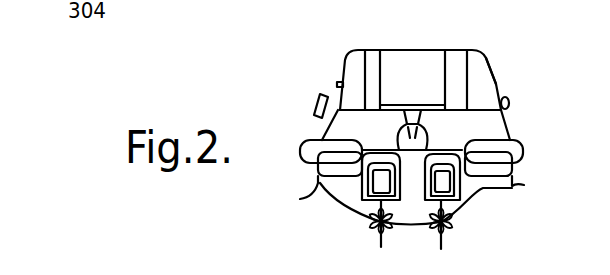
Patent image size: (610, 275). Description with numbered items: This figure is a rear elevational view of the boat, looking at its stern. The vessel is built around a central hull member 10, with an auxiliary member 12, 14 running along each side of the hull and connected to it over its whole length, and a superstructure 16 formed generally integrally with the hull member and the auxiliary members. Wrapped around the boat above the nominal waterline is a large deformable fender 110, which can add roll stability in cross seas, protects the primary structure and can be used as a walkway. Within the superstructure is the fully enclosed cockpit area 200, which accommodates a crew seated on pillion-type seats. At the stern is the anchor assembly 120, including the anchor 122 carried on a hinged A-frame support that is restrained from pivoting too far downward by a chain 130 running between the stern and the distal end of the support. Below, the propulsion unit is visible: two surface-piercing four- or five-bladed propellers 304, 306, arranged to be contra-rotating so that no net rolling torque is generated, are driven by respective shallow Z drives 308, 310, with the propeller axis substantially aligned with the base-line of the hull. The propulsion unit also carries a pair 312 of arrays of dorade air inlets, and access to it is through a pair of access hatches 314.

The central hull member 10 is at (483, 189).
The auxiliary member 12 is at (524, 185).
The auxiliary member 14 is at (300, 199).
The superstructure 16 is at (491, 65).
The deformable fender 110 is at (306, 138).
The anchor assembly 120 is at (430, 144).
The anchor 122 is at (509, 99).
The cockpit area 200 is at (431, 51).
The propeller 304 is at (457, 224).
The propeller 306 is at (371, 224).
The Z drive 308 is at (457, 186).
The Z drive 310 is at (367, 189).
The pair of arrays of dorade air inlets 312 is at (320, 95).
The access hatches 314 is at (253, 266).
The chain 130 is at (37, 269).